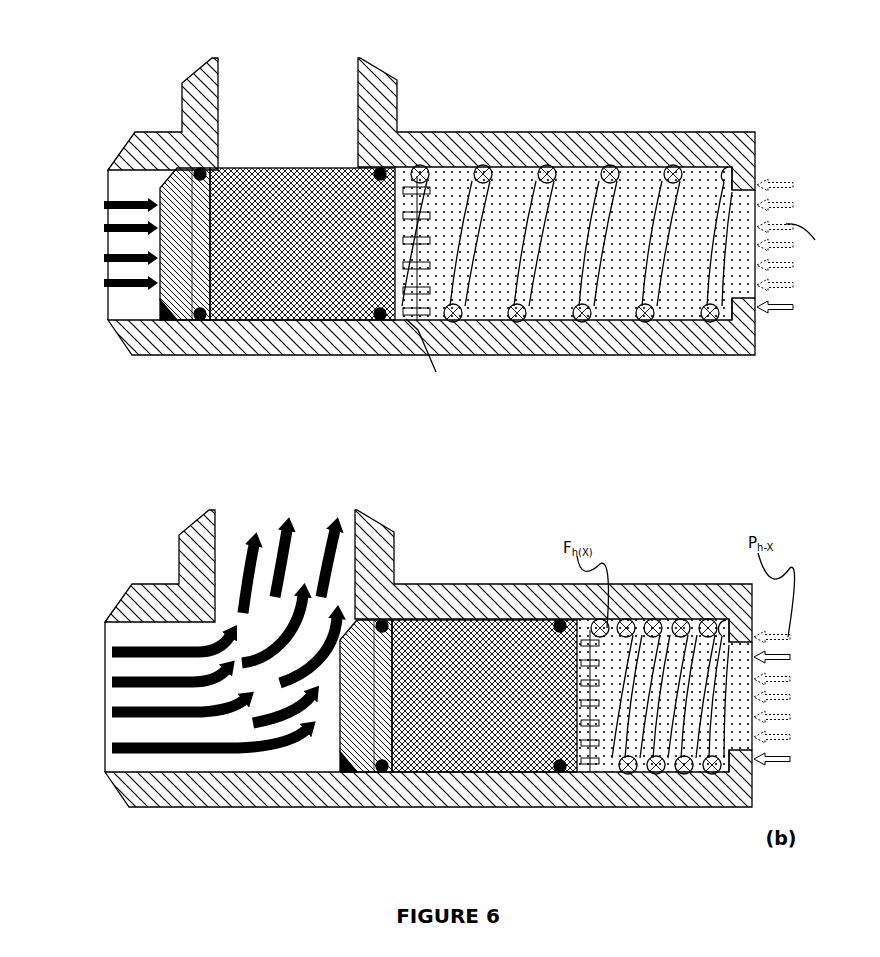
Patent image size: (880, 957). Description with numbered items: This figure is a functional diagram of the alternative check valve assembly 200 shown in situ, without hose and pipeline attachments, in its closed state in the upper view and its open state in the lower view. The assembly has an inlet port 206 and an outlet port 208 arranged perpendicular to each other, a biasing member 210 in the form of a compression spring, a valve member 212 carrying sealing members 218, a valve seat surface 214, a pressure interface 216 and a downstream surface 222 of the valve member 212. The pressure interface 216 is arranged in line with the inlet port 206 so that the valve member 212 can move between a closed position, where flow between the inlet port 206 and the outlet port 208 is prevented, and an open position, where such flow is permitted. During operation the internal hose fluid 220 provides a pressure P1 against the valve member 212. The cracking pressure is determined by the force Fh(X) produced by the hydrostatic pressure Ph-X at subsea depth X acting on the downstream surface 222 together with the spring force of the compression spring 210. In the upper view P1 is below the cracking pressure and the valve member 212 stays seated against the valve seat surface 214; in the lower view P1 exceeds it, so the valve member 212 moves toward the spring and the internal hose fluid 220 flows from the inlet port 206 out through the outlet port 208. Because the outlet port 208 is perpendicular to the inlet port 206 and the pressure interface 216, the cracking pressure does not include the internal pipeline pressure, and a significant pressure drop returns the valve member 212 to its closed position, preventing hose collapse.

The check valve assembly 200 is at (71, 35).
The inlet port 206 is at (107, 298).
The outlet port 208 is at (312, 57).
The biasing member 210 is at (612, 167).
The valve member 212 is at (304, 322).
The valve seat surface 214 is at (168, 323).
The pressure interface 216 is at (742, 168).
The sealing members 218 is at (385, 166).
The internal hose fluid 220 is at (103, 238).
The downstream surface 222 is at (400, 202).